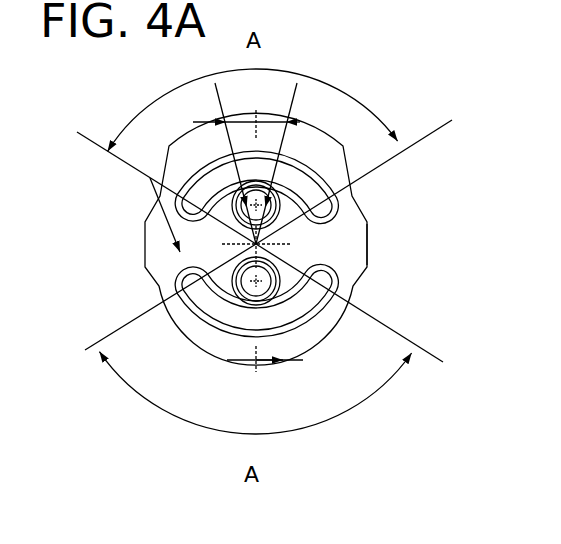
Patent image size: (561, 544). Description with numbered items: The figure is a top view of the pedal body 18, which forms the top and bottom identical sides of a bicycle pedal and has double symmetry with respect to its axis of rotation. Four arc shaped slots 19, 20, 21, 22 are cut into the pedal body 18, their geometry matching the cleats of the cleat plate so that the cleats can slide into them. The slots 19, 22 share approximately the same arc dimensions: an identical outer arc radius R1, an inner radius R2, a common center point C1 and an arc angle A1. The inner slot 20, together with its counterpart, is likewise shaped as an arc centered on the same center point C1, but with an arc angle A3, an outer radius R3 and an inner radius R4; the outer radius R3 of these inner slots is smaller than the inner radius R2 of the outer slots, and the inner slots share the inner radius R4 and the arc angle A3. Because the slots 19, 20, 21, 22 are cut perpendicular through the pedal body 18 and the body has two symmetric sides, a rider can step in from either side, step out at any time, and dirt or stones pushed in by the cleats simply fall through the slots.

The pedal body 18 is at (145, 222).
The arc shaped slot 19 is at (200, 316).
The arc shaped slot 20 is at (197, 285).
The arc shaped slot 21 is at (367, 242).
The arc shaped slot 22 is at (338, 190).
The center point C1 is at (245, 247).
The outer arc radius R1 is at (354, 231).
The inner radius R2 is at (166, 233).
The outer radius R3 is at (276, 162).
The inner radius R4 is at (235, 161).
The arc angle A1 is at (255, 251).
The arc angle A3 is at (291, 121).